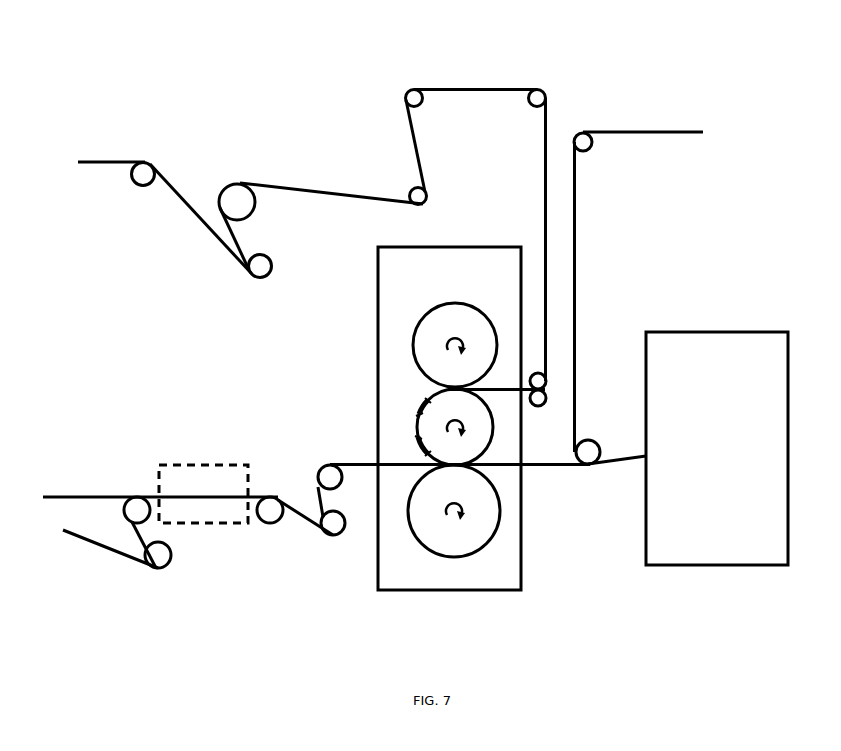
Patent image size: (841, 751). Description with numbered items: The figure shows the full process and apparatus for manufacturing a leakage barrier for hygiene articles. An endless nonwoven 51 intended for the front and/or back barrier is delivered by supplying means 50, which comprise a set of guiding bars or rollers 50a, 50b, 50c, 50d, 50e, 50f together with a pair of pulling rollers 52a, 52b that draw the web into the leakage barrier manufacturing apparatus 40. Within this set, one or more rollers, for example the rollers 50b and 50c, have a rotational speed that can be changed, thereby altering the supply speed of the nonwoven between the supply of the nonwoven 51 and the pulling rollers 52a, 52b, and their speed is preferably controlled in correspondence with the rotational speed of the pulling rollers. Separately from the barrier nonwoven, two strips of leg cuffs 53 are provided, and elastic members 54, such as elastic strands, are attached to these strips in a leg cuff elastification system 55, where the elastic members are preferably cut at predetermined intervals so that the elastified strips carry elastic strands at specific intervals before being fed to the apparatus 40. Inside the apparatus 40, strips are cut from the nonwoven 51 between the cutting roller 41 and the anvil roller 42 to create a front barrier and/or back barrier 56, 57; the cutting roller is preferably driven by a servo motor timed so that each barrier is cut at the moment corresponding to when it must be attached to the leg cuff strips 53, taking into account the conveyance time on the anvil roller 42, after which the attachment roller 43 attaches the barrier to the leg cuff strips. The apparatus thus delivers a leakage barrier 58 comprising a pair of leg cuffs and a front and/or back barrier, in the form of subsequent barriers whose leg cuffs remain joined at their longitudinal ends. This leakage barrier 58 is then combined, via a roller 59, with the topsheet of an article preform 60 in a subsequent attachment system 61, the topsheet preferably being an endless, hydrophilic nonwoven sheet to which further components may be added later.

The leakage barrier manufacturing apparatus 40 is at (413, 276).
The cutting roller 41 is at (463, 330).
The anvil roller 42 is at (464, 414).
The attachment roller 43 is at (488, 518).
The supplying means 50 is at (272, 141).
The guiding bar or roller 50a is at (144, 186).
The guiding roller 50b is at (267, 278).
The guiding roller 50c is at (243, 207).
The guiding bar or roller 50d is at (427, 197).
The guiding bar or roller 50e is at (418, 103).
The guiding bar or roller 50f is at (533, 104).
The endless nonwoven 51 is at (103, 160).
The pulling roller 52a is at (541, 380).
The pulling roller 52b is at (539, 405).
The leg cuff strips 53 is at (77, 540).
The elastic members 54 is at (52, 497).
The leg cuff elastification system 55 is at (195, 483).
The front barrier 56 is at (419, 452).
The back barrier 57 is at (420, 406).
The leakage barrier 58 is at (542, 466).
The roller 59 is at (590, 448).
The article preform 60 is at (630, 130).
The attachment system 61 is at (705, 372).